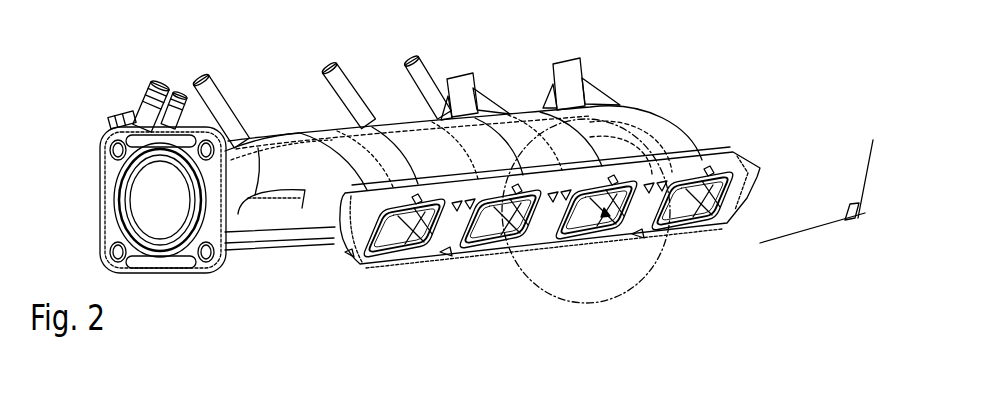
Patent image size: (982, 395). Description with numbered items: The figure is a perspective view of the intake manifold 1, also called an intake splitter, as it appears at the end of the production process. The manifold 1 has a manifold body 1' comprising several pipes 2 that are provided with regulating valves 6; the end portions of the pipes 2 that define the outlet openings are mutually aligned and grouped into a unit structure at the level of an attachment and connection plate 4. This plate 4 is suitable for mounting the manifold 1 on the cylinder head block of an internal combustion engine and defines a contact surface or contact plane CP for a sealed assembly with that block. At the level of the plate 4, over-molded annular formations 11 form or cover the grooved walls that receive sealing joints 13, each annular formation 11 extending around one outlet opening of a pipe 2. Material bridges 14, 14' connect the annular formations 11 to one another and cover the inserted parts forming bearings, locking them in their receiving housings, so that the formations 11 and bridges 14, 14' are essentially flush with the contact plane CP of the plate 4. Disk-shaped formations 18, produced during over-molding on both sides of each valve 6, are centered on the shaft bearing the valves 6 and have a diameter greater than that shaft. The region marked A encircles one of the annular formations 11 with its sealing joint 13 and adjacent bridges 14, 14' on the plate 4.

The intake manifold 1 is at (488, 126).
The manifold body 1' is at (280, 250).
The pipes 2 is at (460, 150).
The attachment and connection plate 4 is at (737, 162).
The valves 6 is at (395, 238).
The annular formations 11 is at (552, 242).
The sealing joints 13 is at (593, 243).
The material bridges 14 is at (630, 276).
The material bridges 14' is at (667, 249).
The disk-shaped formations 18 is at (427, 248).
The detail region A is at (567, 302).
The contact plane CP is at (867, 167).